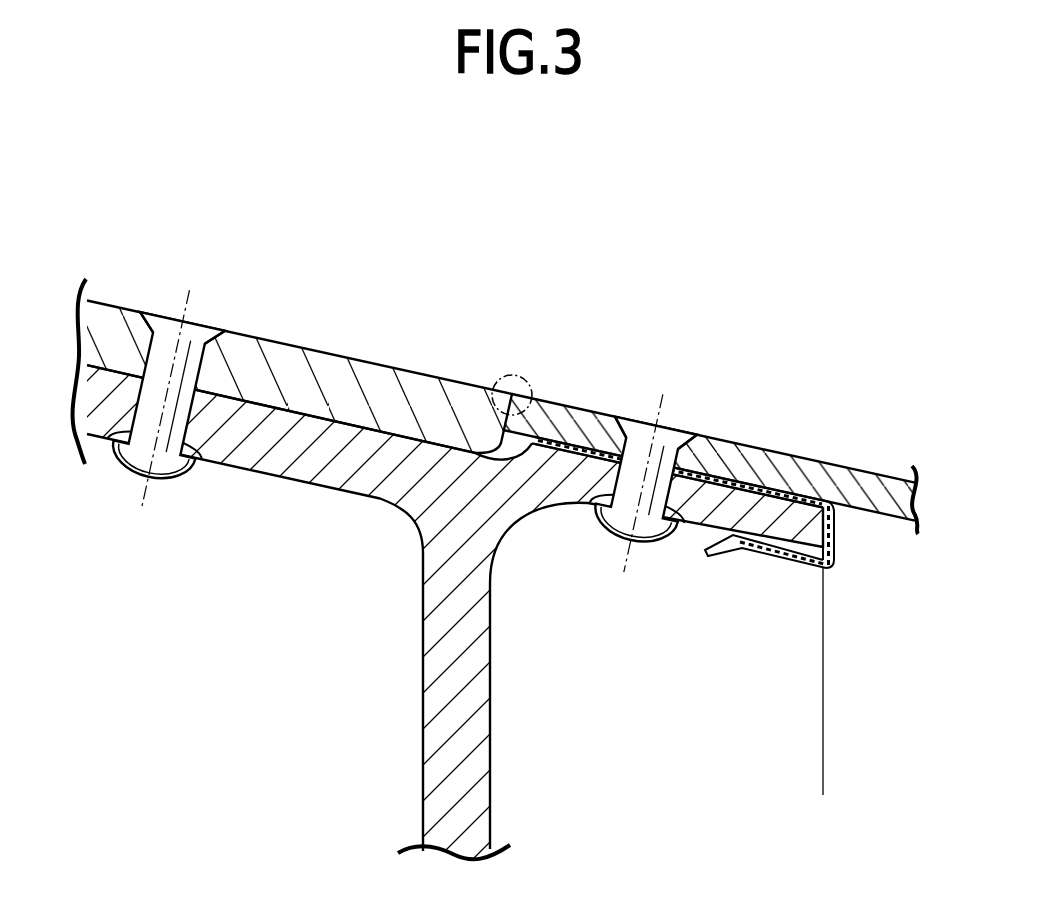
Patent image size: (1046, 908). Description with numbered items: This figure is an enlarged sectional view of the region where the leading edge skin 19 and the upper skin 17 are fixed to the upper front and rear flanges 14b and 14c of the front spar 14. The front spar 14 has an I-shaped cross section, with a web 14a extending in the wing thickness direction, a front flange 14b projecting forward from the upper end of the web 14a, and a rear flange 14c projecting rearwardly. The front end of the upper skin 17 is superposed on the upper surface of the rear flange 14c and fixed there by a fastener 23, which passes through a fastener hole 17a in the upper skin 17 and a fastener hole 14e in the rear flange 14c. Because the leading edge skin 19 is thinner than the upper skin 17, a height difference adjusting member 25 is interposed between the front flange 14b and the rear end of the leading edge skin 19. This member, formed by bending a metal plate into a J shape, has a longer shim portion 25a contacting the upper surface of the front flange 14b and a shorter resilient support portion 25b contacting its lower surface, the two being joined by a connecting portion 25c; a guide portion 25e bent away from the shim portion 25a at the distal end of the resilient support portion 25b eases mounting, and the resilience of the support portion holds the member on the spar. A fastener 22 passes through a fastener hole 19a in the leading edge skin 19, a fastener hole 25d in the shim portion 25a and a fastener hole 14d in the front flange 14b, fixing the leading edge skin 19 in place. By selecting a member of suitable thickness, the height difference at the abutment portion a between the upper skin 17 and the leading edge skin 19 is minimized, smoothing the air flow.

The front spar 14 is at (455, 612).
The web 14a is at (437, 718).
The front flange 14b is at (697, 517).
The rear flange 14c is at (312, 470).
The fastener hole 14d is at (605, 534).
The fastener hole 14e is at (168, 455).
The upper skin 17 is at (320, 351).
The fastener hole 17a is at (182, 338).
The leading edge skin 19 is at (828, 462).
The fastener hole 19a is at (670, 432).
The fastener 22 is at (648, 530).
The fastener 23 is at (135, 458).
The height difference adjusting member 25 is at (728, 596).
The shim portion 25a is at (752, 482).
The resilient support portion 25b is at (818, 564).
The connecting portion 25c is at (835, 513).
The fastener hole 25d is at (636, 420).
The guide portion 25e is at (718, 550).
The portion a is at (509, 375).